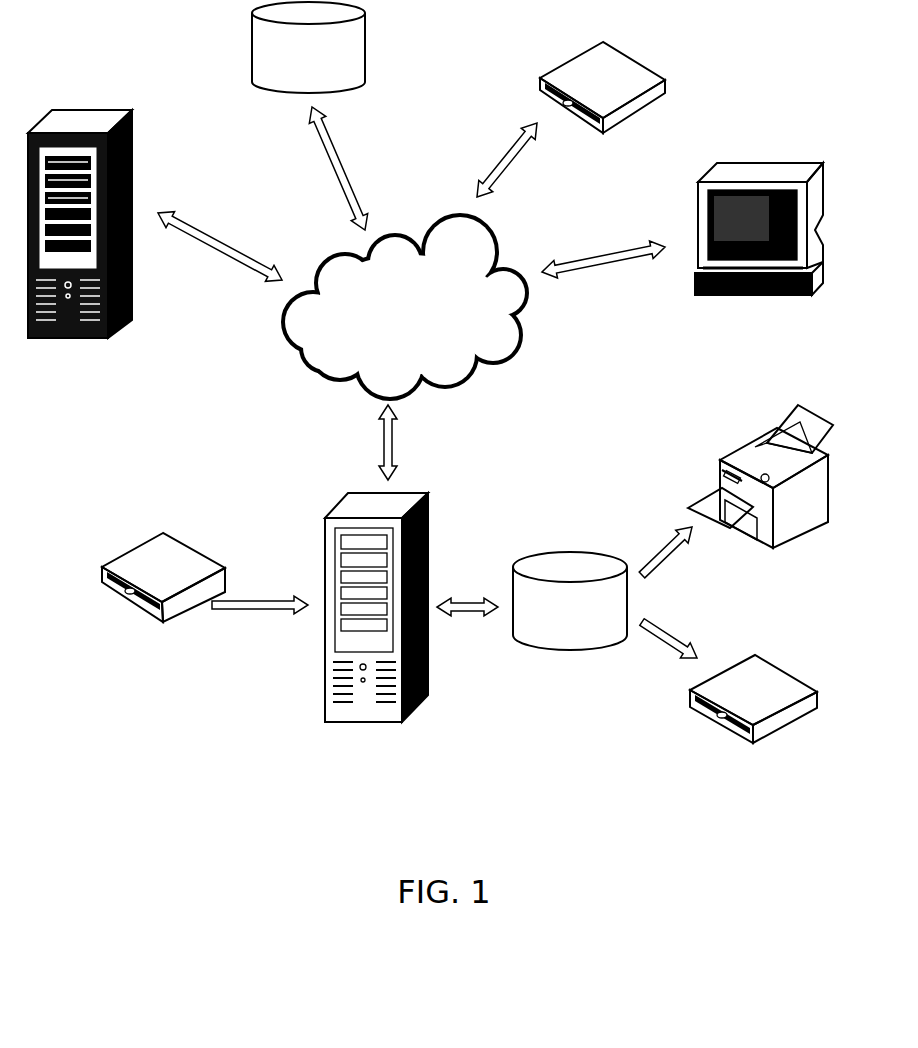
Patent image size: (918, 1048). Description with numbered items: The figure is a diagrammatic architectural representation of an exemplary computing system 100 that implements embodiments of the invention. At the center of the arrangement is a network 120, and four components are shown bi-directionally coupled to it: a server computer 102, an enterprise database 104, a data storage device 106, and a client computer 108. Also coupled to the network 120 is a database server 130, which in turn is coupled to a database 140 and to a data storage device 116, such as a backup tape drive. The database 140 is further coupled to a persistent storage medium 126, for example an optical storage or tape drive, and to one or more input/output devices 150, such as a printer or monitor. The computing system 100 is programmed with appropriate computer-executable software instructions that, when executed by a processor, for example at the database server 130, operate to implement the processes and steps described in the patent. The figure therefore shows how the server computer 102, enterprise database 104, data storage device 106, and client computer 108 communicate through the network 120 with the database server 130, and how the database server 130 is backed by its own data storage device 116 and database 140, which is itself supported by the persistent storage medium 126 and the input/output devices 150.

The computing system 100 is at (143, 785).
The server computer 102 is at (80, 249).
The enterprise database 104 is at (308, 47).
The data storage device 106 is at (602, 87).
The client computer 108 is at (759, 253).
The data storage device 116 is at (163, 577).
The network 120 is at (405, 307).
The persistent storage medium 126 is at (753, 699).
The database server 130 is at (376, 631).
The database 140 is at (570, 601).
The input/output device 150 is at (760, 476).